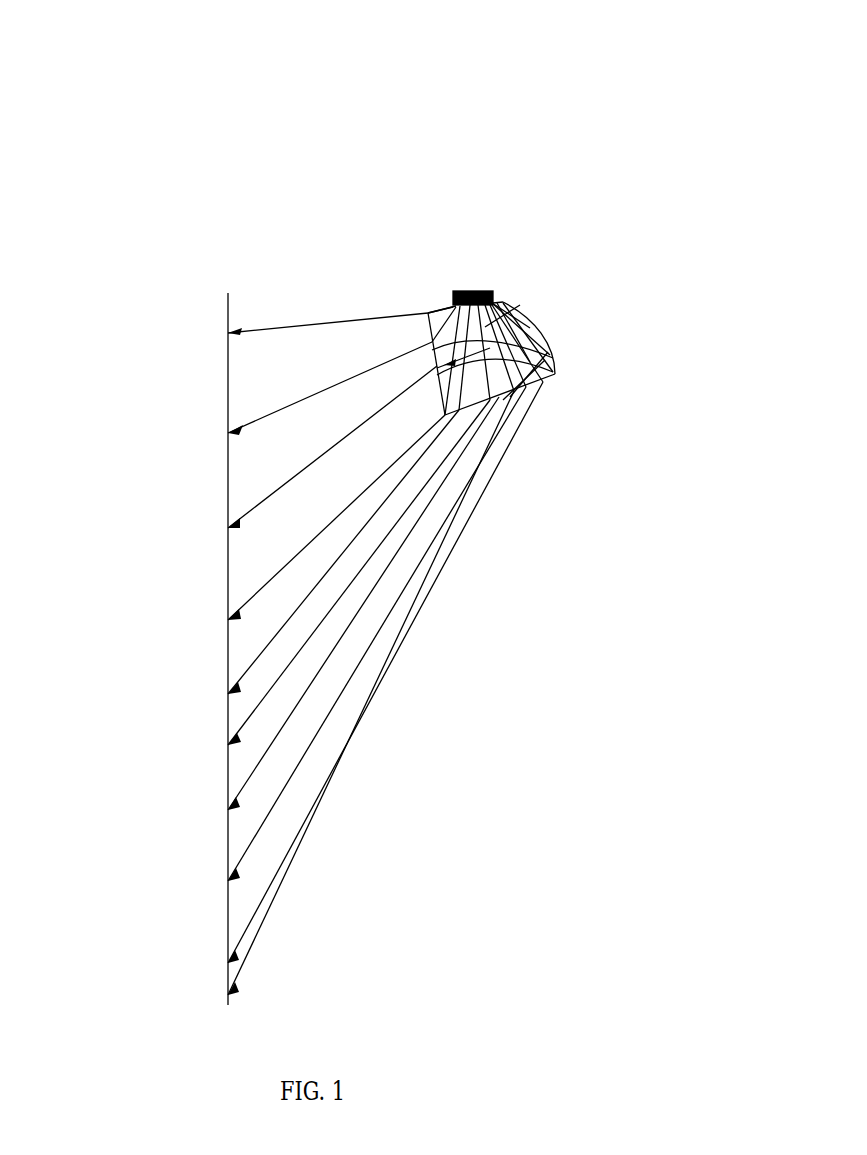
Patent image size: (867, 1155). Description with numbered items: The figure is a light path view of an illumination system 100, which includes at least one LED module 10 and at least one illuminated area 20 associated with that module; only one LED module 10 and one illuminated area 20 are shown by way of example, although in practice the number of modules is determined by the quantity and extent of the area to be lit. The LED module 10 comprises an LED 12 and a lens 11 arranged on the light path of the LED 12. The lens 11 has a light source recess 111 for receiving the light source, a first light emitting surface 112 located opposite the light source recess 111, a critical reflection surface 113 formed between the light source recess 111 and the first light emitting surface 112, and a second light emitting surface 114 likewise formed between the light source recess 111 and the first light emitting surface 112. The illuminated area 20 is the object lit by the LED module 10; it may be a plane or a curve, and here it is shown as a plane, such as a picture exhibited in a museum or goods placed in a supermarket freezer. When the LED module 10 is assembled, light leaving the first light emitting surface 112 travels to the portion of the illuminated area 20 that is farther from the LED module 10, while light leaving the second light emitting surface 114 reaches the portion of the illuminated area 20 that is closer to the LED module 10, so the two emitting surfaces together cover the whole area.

The illumination system 100 is at (430, 65).
The LED module 10 is at (687, 187).
The lens 11 is at (627, 258).
The light source recess 111 is at (505, 302).
The first light emitting surface 112 is at (548, 387).
The critical reflection surface 113 is at (547, 329).
The second light emitting surface 114 is at (553, 357).
The LED 12 is at (483, 291).
The illuminated area 20 is at (228, 447).